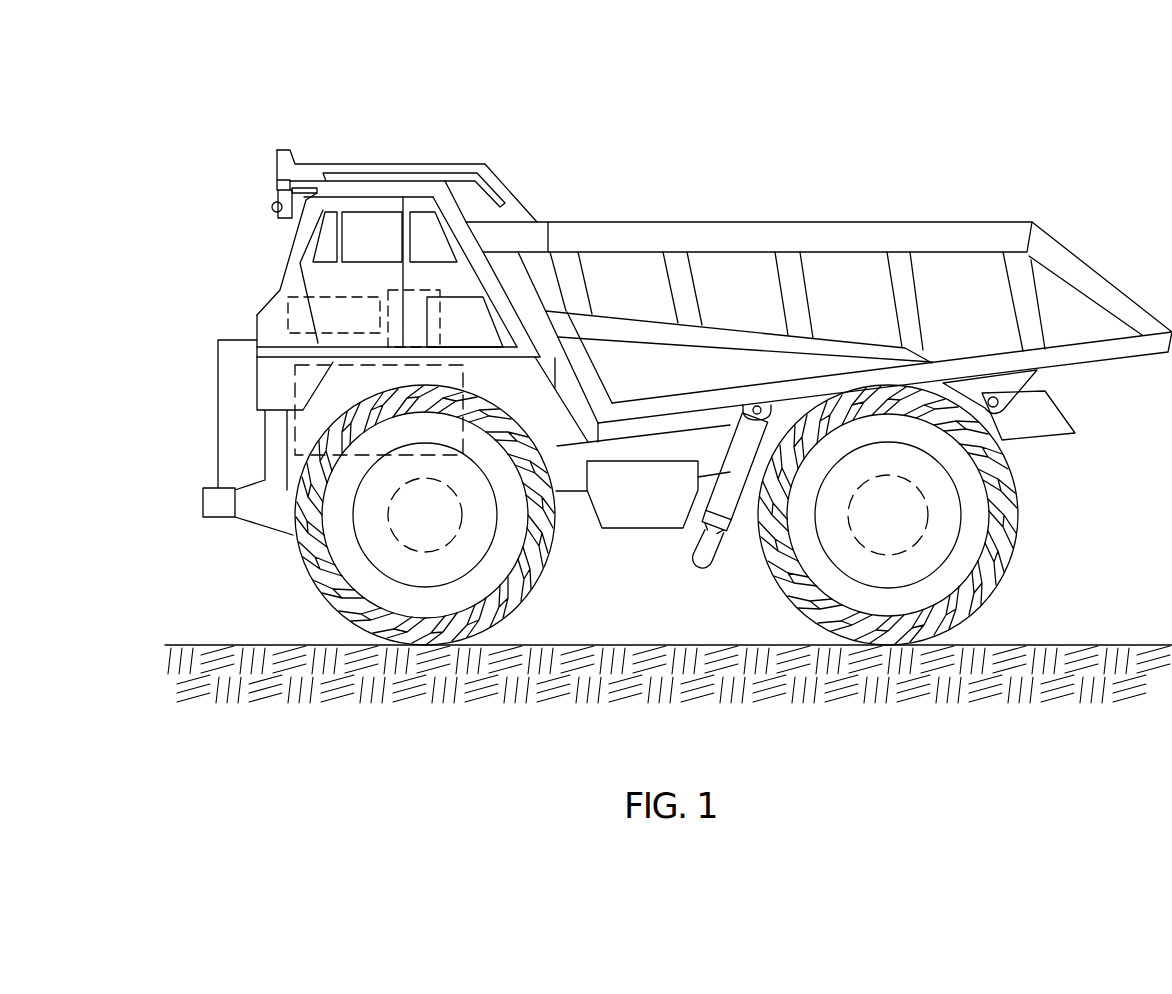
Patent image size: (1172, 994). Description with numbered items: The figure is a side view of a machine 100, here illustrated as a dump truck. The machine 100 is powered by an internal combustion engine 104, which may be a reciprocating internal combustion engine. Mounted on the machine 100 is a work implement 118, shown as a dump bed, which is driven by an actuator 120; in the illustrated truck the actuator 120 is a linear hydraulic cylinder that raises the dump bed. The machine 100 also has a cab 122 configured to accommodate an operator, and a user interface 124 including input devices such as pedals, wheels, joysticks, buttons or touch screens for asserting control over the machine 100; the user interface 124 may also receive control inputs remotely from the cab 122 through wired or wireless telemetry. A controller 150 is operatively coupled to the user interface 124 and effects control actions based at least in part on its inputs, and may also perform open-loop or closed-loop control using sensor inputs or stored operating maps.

The machine 100 is at (942, 85).
The internal combustion engine 104 is at (295, 396).
The work implement 118 is at (964, 223).
The actuator 120 is at (733, 487).
The cab 122 is at (210, 205).
The user interface 124 is at (288, 301).
The controller 150 is at (413, 290).